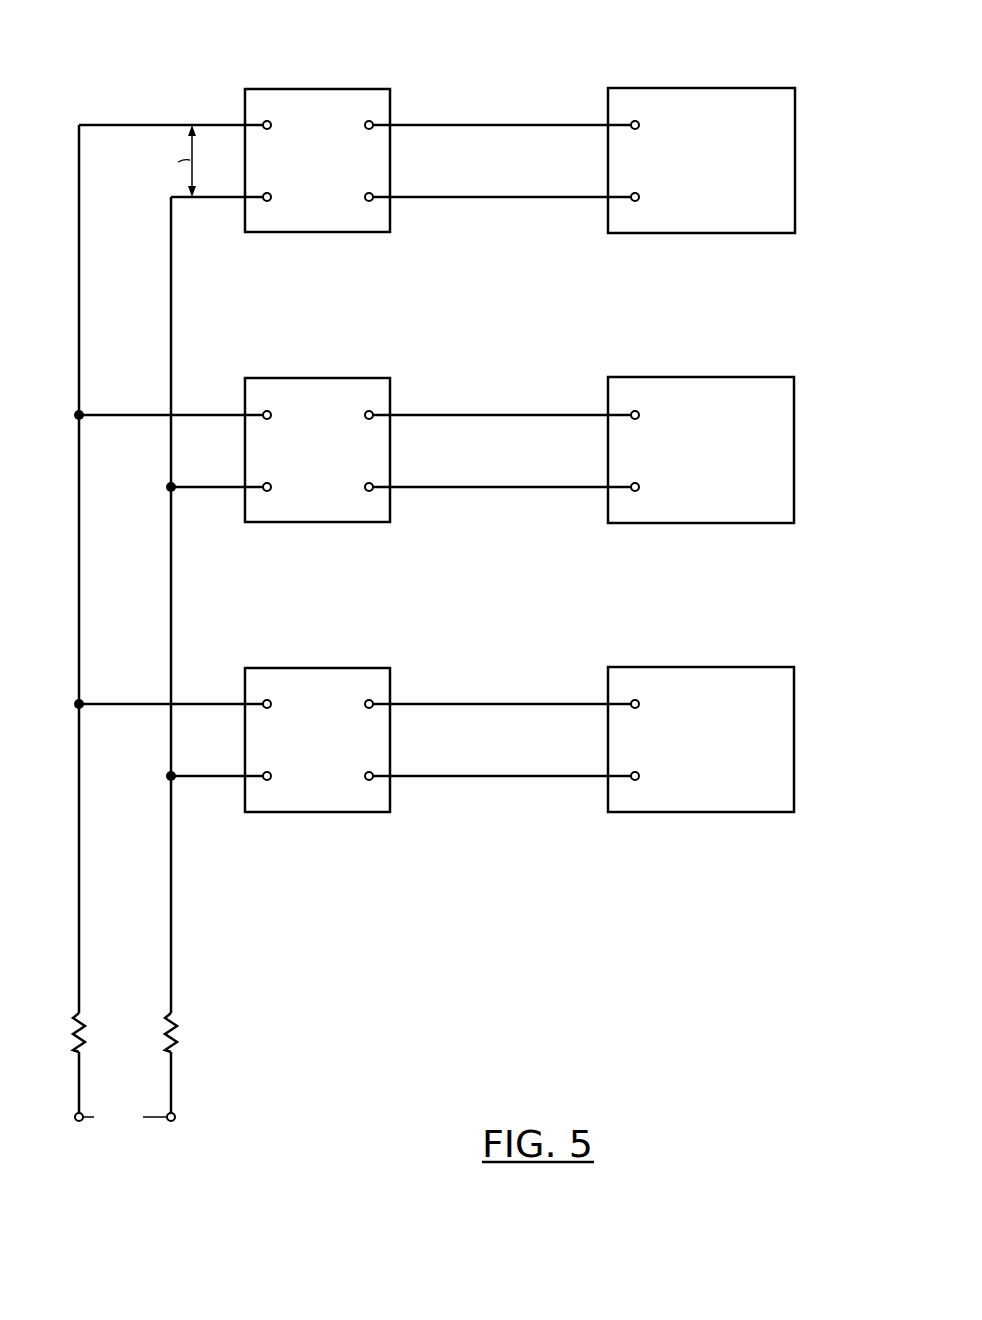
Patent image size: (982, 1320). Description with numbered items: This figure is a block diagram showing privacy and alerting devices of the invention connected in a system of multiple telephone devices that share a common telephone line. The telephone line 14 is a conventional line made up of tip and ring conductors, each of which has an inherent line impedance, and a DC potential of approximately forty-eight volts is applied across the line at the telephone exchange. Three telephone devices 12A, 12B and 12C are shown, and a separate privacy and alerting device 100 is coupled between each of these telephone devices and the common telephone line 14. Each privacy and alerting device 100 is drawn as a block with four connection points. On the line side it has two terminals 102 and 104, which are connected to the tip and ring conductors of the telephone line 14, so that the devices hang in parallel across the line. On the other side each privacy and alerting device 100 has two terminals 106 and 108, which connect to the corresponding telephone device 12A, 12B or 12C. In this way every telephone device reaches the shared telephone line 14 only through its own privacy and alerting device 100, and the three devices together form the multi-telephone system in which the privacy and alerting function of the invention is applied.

The privacy and alerting device 100 is at (315, 89).
The terminal 102 is at (264, 121).
The terminal 104 is at (265, 201).
The terminal 106 is at (372, 121).
The terminal 108 is at (372, 201).
The telephone device 12A is at (795, 168).
The telephone device 12B is at (794, 462).
The telephone device 12C is at (794, 752).
The telephone line 14 is at (79, 913).